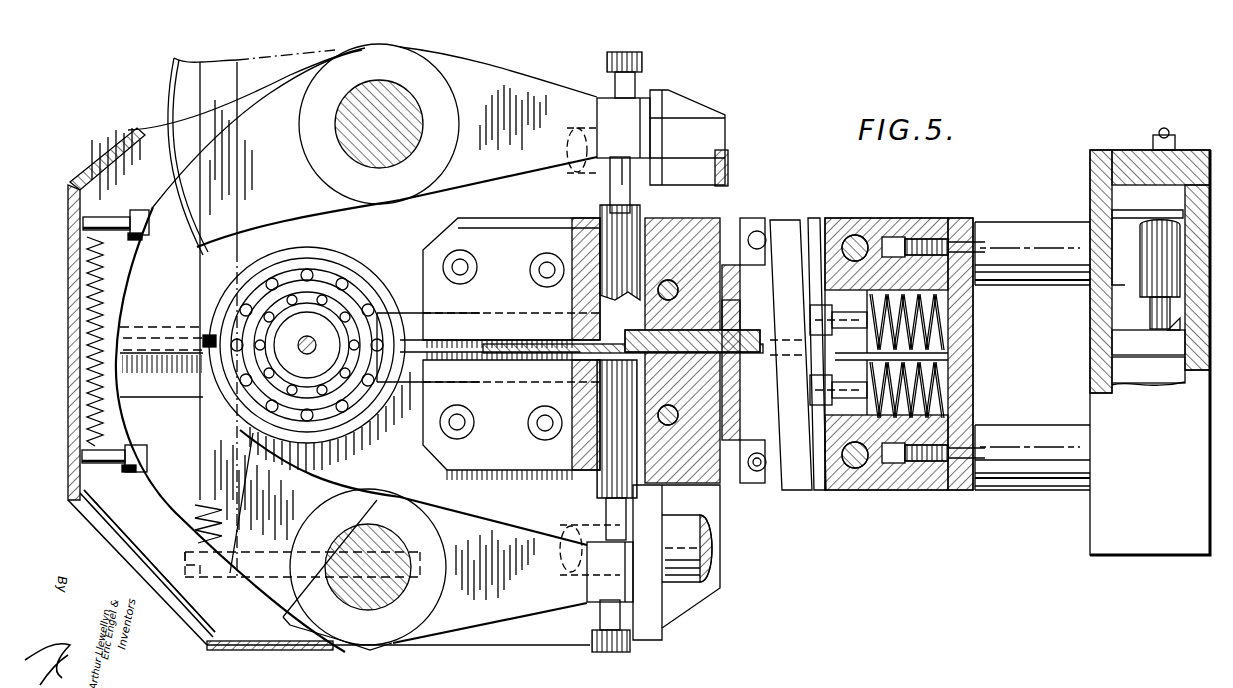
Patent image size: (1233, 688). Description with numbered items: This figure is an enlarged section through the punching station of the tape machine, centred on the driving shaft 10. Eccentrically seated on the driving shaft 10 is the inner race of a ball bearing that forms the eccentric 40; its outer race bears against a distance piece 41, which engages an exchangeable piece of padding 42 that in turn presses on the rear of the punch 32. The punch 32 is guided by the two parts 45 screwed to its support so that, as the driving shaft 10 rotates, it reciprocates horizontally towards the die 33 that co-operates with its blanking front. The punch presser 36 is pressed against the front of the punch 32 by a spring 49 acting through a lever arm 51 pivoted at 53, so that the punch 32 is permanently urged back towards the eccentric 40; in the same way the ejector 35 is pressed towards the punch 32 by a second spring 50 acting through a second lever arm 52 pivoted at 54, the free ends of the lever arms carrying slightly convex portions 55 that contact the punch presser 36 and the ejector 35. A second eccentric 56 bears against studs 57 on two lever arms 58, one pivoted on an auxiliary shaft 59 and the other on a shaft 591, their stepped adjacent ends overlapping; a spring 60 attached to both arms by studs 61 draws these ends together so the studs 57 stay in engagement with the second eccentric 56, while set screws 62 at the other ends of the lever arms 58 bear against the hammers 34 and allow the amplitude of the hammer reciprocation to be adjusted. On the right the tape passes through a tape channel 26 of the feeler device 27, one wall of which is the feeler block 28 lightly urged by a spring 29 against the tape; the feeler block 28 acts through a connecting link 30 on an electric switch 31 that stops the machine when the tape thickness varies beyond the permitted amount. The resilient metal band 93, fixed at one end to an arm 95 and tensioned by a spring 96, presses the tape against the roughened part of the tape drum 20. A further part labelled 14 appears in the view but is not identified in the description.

The driving shaft 10 is at (300, 340).
The frame member 14 is at (145, 578).
The tape drum 20 is at (582, 64).
The tape channel 26 is at (1125, 357).
The feeler device 27 is at (1169, 505).
The feeler block 28 is at (1138, 342).
The spring 29 is at (1147, 325).
The connecting link 30 is at (1150, 312).
The electric switch 31 is at (1150, 250).
The punch 32 is at (722, 160).
The die 33 is at (703, 280).
The hammers 34 is at (612, 193).
The ejector 35 is at (760, 345).
The punch presser 36 is at (735, 322).
The eccentric 40 is at (348, 300).
The distance piece 41 is at (262, 300).
The piece of padding 42 is at (428, 270).
The parts 45 is at (485, 235).
The spring 49 is at (917, 310).
The second spring 50 is at (897, 410).
The lever arm 51 is at (788, 250).
The second lever arm 52 is at (818, 480).
The pivot 53 is at (760, 236).
The pivot 54 is at (768, 468).
The convex portions 55 is at (768, 358).
The second eccentric 56 is at (346, 258).
The studs 57 is at (205, 334).
The lever arms 58 is at (488, 167).
The auxiliary shaft 59 is at (383, 118).
The shaft 591 is at (380, 590).
The spring 60 is at (122, 397).
The studs 61 is at (115, 224).
The set screws 62 is at (644, 62).
The resilient metal band 93 is at (172, 78).
The arm 95 is at (235, 575).
The spring 96 is at (195, 536).